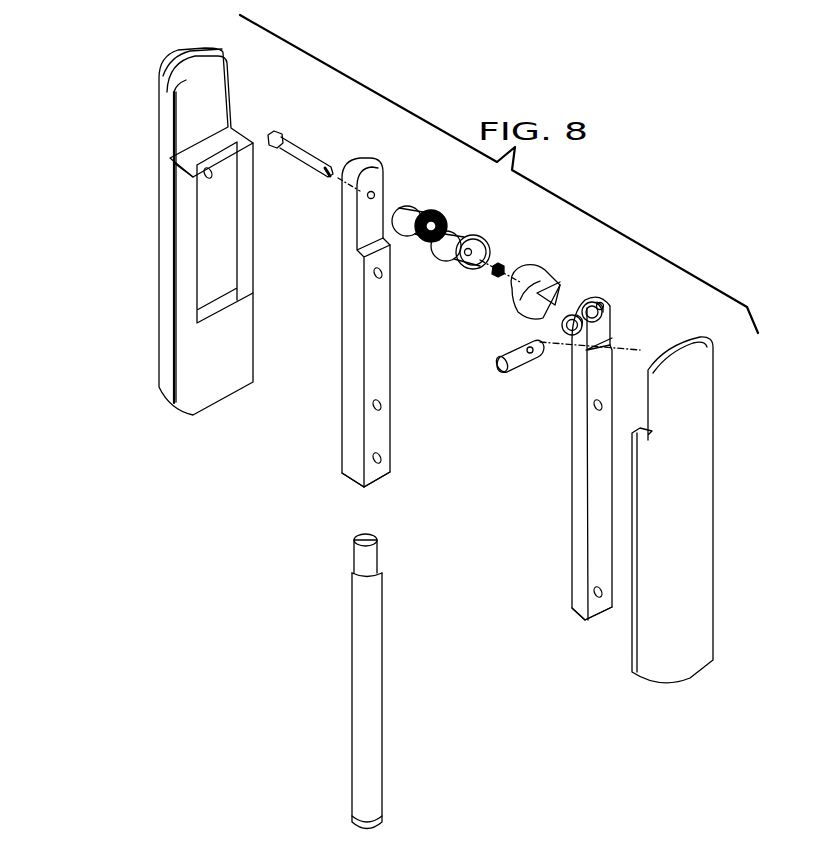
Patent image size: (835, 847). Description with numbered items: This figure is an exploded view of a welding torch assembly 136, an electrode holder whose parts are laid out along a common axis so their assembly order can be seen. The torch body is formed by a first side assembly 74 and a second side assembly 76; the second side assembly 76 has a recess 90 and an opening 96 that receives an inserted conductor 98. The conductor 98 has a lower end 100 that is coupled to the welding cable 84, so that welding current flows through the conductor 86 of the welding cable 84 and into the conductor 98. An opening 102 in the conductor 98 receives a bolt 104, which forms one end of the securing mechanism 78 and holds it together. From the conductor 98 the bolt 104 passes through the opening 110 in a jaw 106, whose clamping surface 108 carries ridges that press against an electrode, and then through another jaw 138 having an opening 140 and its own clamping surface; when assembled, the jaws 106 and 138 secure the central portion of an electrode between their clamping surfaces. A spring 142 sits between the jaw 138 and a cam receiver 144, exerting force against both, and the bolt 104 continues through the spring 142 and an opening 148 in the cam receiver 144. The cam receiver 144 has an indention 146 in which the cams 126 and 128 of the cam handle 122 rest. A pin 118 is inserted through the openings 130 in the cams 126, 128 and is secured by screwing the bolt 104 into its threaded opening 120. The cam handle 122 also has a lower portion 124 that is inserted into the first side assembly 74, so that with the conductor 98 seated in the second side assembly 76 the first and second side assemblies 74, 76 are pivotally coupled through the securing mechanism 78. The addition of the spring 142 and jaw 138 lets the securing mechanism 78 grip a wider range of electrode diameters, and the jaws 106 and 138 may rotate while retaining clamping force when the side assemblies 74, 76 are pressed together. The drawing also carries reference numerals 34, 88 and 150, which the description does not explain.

The mounting bracket assembly 34 is at (135, 137).
The first side assembly 74 is at (697, 470).
The second side assembly 76 is at (172, 245).
The securing mechanism 78 is at (458, 335).
The welding cable 84 is at (318, 633).
The conductor 86 is at (375, 555).
The pin shaft 88 is at (372, 663).
The recess 90 is at (216, 262).
The opening 96 is at (178, 147).
The conductor 98 is at (363, 350).
The lower end 100 is at (353, 472).
The opening 102 is at (375, 196).
The bolt 104 is at (312, 160).
The jaw 106 is at (425, 202).
The clamping surface 108 is at (462, 205).
The opening 110 is at (440, 247).
The pin 118 is at (500, 367).
The threaded opening 120 is at (530, 360).
The cam handle 122 is at (578, 490).
The lower portion 124 is at (580, 612).
The cam 126 is at (567, 337).
The cam 128 is at (607, 310).
The openings 130 is at (609, 336).
The welding torch assembly 136 is at (722, 242).
The jaw 138 is at (473, 222).
The opening 140 is at (468, 256).
The spring 142 is at (502, 262).
The cam receiver 144 is at (533, 263).
The indention 146 is at (530, 315).
The opening 148 is at (568, 288).
The component 150 is at (803, 835).